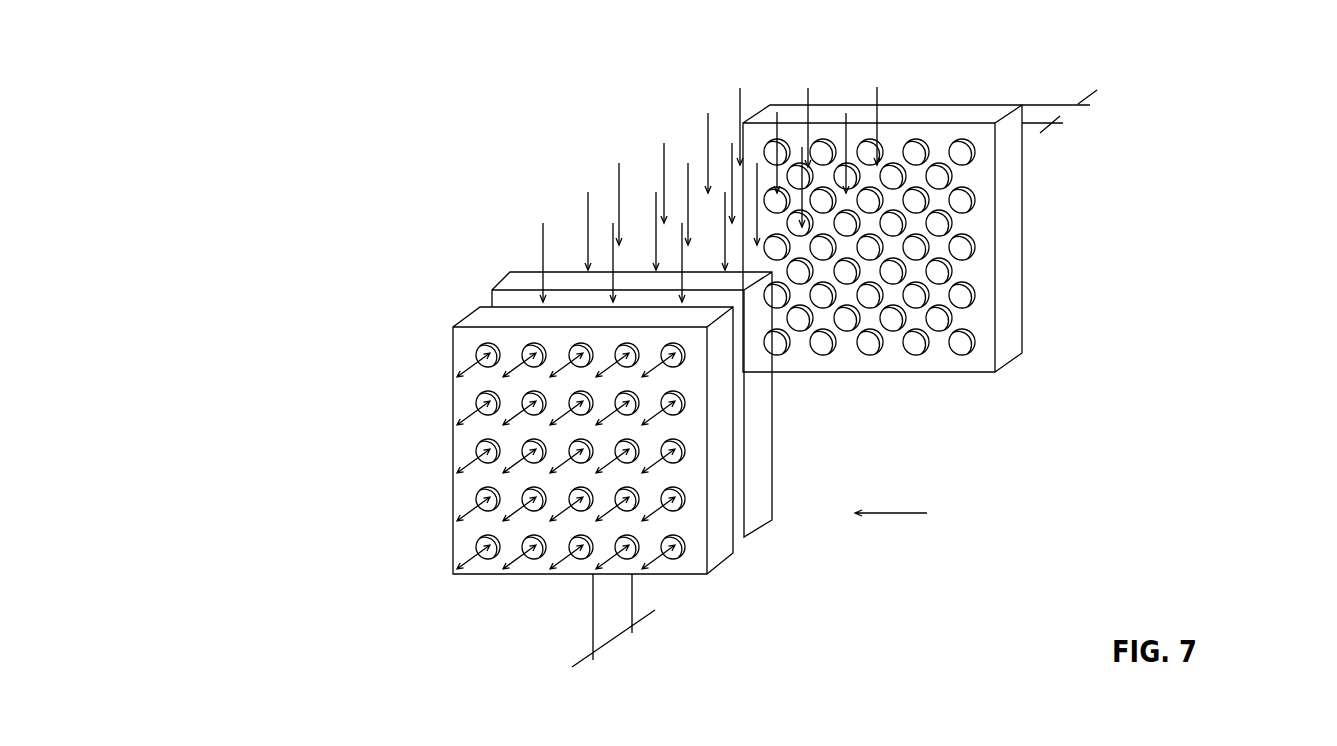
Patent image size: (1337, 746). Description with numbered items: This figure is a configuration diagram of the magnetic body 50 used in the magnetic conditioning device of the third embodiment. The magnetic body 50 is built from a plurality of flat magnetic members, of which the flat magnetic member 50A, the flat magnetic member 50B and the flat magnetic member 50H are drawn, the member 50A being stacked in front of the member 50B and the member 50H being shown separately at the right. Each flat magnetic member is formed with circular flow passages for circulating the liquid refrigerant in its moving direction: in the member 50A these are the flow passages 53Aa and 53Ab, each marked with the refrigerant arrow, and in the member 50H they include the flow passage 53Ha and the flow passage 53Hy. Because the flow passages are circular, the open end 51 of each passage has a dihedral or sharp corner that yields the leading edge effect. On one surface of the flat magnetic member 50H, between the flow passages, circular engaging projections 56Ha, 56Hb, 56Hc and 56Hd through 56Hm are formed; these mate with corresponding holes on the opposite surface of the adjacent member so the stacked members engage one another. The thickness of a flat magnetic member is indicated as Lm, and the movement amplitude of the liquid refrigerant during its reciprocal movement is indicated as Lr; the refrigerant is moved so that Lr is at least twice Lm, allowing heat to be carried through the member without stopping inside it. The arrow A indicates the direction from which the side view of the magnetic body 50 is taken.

The magnetic body 50 is at (440, 98).
The flat magnetic member 50H is at (919, 215).
The flat magnetic member 50A is at (581, 440).
The flat magnetic member 50B is at (766, 420).
The open end 51 is at (952, 146).
The flow passage 53Ha is at (769, 143).
The flow passage 53Hy is at (961, 357).
The engaging projection 56Hm is at (796, 185).
The engaging projection 56Ha is at (949, 183).
The engaging projection 56Hb is at (938, 228).
The engaging projection 56Hc is at (938, 274).
The engaging projection 56Hd is at (938, 320).
The flow passage 53Aa is at (479, 355).
The flow passage 53Ab is at (477, 400).
The thickness of flat magnetic member Lm is at (1061, 113).
The movement amplitude of liquid refrigerant Lr is at (613, 621).
The arrow A is at (907, 514).